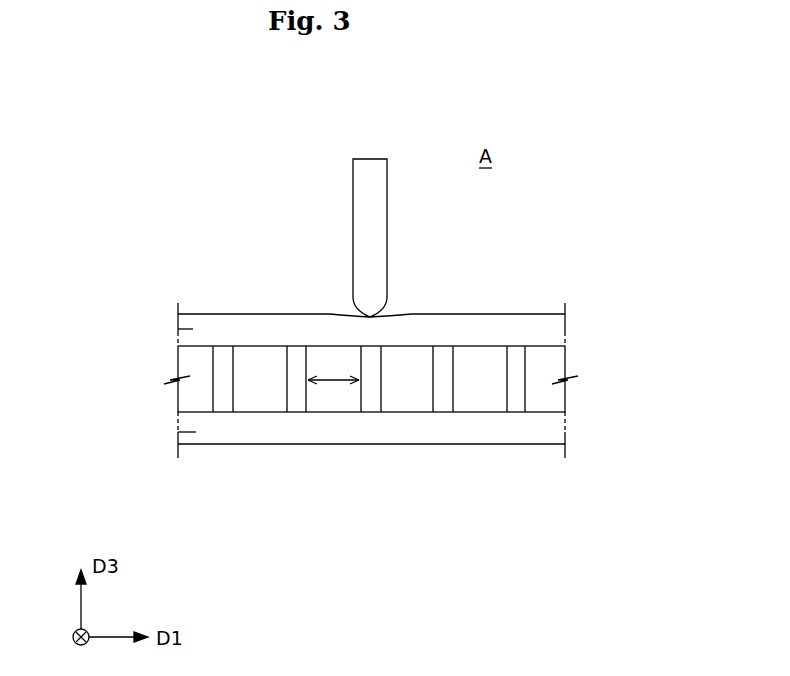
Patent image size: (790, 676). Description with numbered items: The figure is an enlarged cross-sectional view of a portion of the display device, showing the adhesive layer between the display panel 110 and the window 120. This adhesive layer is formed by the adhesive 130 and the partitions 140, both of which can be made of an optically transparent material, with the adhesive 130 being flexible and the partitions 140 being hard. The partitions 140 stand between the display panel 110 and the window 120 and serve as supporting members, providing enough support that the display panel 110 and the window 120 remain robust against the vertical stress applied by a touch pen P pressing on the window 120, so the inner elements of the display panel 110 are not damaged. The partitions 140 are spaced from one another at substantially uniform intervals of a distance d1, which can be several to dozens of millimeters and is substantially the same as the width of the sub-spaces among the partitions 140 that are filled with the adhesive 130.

The display panel 110 is at (196, 432).
The window 120 is at (193, 329).
The adhesive 130 is at (195, 366).
The partitions 140 is at (223, 397).
The touch pen P is at (366, 212).
The distance d1 is at (333, 380).